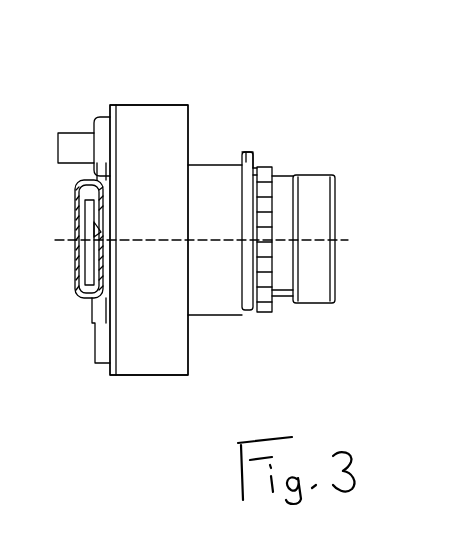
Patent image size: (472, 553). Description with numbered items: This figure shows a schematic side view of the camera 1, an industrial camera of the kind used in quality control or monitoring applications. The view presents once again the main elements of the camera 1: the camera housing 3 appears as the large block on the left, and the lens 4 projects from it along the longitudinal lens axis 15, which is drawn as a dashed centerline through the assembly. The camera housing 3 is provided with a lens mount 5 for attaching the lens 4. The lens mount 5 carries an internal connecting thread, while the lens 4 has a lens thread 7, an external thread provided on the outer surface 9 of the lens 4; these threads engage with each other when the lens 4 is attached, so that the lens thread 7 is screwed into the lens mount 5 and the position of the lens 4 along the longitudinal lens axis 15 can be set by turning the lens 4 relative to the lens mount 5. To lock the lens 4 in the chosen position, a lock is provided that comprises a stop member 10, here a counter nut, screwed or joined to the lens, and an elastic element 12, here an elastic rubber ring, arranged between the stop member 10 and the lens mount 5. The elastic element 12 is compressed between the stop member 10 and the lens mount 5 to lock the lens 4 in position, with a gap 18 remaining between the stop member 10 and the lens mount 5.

The camera 1 is at (298, 60).
The camera housing 3 is at (165, 376).
The lens 4 is at (310, 175).
The lens mount 5 is at (212, 165).
The lens thread 7 is at (300, 297).
The outer surface 9 is at (284, 172).
The stop member 10 is at (262, 166).
The elastic element 12 is at (250, 311).
The longitudinal lens axis 15 is at (348, 240).
The gap 18 is at (249, 151).